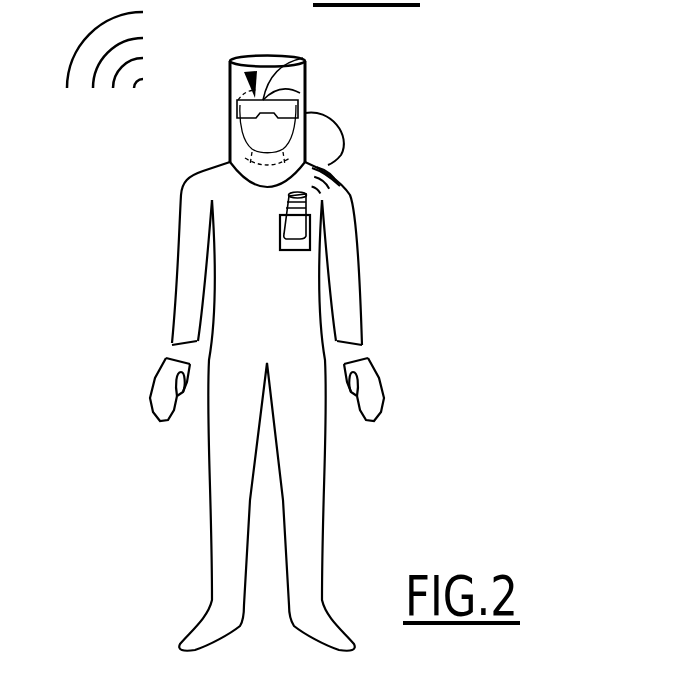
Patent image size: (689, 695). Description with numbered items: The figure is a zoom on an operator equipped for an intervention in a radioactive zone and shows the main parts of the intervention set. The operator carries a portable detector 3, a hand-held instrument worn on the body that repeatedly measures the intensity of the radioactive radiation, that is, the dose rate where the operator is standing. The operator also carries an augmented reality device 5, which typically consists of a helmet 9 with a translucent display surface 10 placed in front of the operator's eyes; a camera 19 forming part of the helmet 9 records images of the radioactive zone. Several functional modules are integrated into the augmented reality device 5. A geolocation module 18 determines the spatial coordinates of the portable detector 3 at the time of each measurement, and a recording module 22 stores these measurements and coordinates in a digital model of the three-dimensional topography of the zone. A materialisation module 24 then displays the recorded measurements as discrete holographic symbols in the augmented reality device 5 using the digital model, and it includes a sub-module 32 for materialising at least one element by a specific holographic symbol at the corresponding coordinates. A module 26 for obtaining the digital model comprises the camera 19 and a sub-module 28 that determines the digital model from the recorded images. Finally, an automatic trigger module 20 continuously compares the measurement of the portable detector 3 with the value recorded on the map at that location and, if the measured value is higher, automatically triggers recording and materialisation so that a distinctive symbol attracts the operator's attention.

The portable detector 3 is at (307, 210).
The augmented reality device 5 is at (184, 135).
The helmet 9 is at (248, 73).
The translucent display surface 10 is at (258, 108).
The camera 19 is at (263, 90).
The geolocation module 18 is at (365, 341).
The automatic trigger module 20 is at (365, 341).
The recording module 22 is at (365, 341).
The materialisation module 24 is at (365, 341).
The module for obtaining the digital model 26 is at (365, 341).
The sub-module for determining the digital model 28 is at (365, 341).
The materialisation sub-module 32 is at (303, 62).